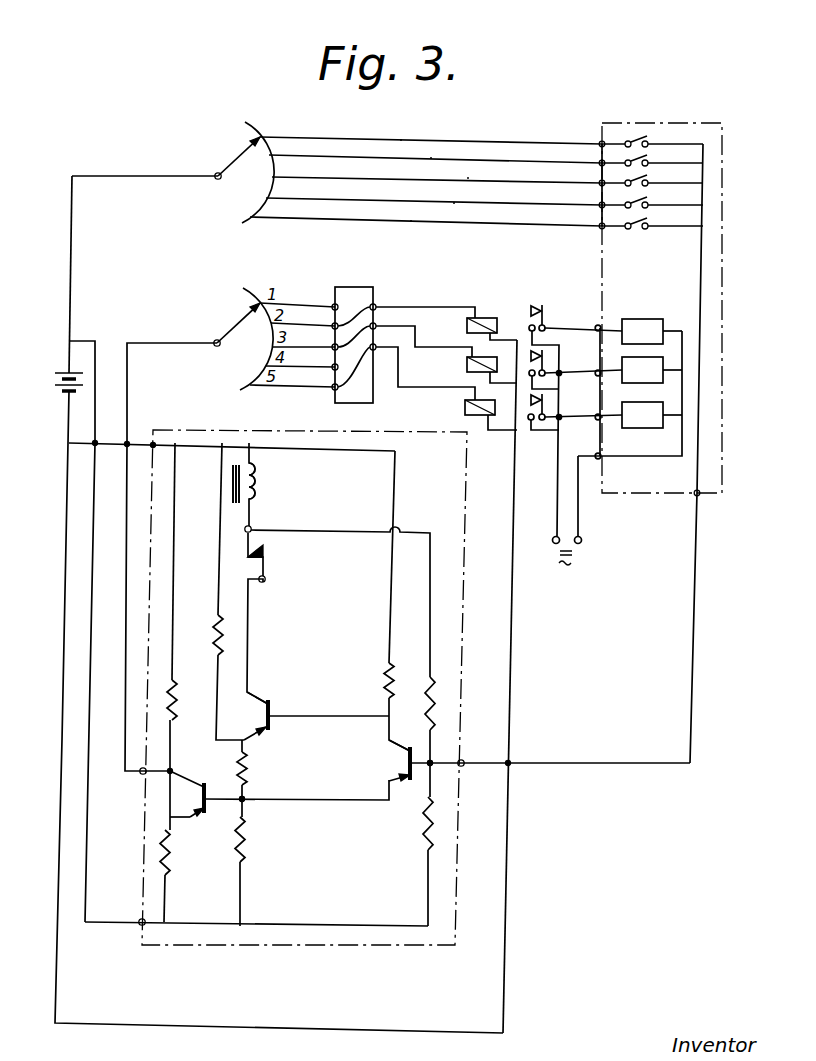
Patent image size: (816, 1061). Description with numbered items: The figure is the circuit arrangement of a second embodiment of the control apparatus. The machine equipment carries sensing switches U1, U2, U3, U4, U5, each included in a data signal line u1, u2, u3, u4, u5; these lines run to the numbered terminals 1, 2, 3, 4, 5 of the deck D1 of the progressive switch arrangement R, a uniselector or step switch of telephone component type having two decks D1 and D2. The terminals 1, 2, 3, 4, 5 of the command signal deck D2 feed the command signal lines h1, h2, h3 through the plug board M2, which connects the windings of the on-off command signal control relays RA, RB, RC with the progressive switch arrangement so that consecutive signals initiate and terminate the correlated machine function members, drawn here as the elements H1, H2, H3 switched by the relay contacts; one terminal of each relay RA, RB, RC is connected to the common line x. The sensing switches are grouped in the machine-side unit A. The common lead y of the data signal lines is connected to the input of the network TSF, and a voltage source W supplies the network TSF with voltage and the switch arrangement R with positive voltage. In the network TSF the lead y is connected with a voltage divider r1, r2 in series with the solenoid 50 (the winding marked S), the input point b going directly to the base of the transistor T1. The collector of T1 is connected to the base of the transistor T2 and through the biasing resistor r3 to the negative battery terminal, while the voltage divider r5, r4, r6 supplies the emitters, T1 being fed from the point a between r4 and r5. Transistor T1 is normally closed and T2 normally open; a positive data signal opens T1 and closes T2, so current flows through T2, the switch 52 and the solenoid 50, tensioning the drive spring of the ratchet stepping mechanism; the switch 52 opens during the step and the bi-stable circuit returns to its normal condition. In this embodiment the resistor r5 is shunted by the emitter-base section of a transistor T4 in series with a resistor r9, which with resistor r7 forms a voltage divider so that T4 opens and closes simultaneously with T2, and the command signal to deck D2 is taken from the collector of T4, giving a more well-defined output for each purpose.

The deck D1 of the uniselector D1 is at (218, 173).
The deck D2 of the uniselector D2 is at (217, 340).
The progressive switch arrangement R is at (250, 234).
The deck terminal contact 1 is at (431, 130).
The deck terminal contact 2 is at (435, 150).
The deck terminal contact 3 is at (437, 171).
The deck terminal contact 4 is at (434, 192).
The deck terminal contact 5 is at (426, 213).
The data signal line u1 is at (405, 128).
The data signal line u2 is at (430, 157).
The data signal line u3 is at (467, 178).
The data signal line u4 is at (410, 222).
The data signal line u5 is at (453, 203).
The sensing switch U1 is at (651, 136).
The sensing switch U2 is at (651, 155).
The sensing switch U3 is at (651, 175).
The sensing switch U4 is at (651, 197).
The sensing switch U5 is at (651, 218).
The switching unit A is at (662, 123).
The plug board M2 is at (352, 287).
The command signal line h1 is at (394, 307).
The command signal line h2 is at (402, 326).
The command signal line h3 is at (398, 365).
The command signal control relay RA is at (480, 318).
The command signal control relay RB is at (497, 360).
The command signal control relay RC is at (465, 409).
The heater H1 is at (652, 331).
The heater H2 is at (652, 370).
The heater H3 is at (652, 415).
The voltage source W is at (57, 389).
The switch contact / relay coil S is at (265, 499).
The solenoid 50 is at (259, 473).
The switch 52 is at (264, 557).
The resistor r1 is at (427, 700).
The resistor r2 is at (421, 833).
The biasing resistor r3 is at (384, 680).
The resistor r4 is at (247, 766).
The resistor r5 is at (245, 850).
The resistor r6 is at (212, 636).
The resistor r7 is at (176, 703).
The resistor r9 is at (170, 855).
The transistor T1 is at (406, 764).
The transistor T2 is at (264, 712).
The transistor T4 is at (215, 782).
The point a is at (245, 802).
The input point b is at (432, 766).
The common line x is at (512, 655).
The common lead of the data signal lines y is at (688, 655).
The TSF network TSF is at (263, 957).